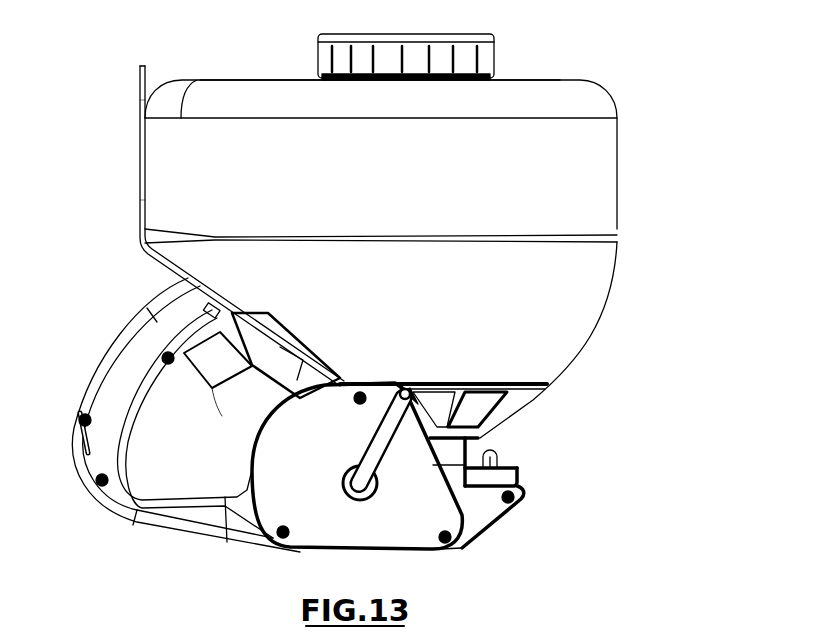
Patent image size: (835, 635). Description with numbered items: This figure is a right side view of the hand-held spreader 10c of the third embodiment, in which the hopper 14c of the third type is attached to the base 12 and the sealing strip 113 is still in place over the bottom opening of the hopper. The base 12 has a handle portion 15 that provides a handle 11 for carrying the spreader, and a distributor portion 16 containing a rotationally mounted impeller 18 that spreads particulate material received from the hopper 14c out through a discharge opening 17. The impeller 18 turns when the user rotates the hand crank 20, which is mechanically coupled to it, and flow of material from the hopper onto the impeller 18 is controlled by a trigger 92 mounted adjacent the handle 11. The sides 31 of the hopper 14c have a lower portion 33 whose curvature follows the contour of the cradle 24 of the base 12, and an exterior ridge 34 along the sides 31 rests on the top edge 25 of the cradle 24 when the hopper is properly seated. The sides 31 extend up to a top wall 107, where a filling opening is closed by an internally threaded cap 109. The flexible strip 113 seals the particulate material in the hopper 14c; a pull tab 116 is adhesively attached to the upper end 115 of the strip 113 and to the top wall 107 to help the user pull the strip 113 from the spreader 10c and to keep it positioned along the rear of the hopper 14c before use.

The spreader 10c is at (650, 44).
The handle 11 is at (97, 375).
The base 12 is at (524, 497).
The hopper 14c is at (618, 215).
The handle portion 15 is at (133, 320).
The distributor portion 16 is at (487, 527).
The discharge opening 17 is at (545, 470).
The impeller 18 is at (492, 452).
The hand crank 20 is at (380, 442).
The cradle 24 is at (513, 408).
The top edge 25 is at (507, 387).
The sides 31 is at (587, 327).
The lower portion 33 is at (438, 398).
The ridge 34 is at (460, 383).
The trigger 92 is at (217, 380).
The top wall 107 is at (277, 79).
The cap 109 is at (496, 58).
The strip 113 is at (140, 200).
The upper end 115 is at (140, 118).
The pull tab 116 is at (140, 76).